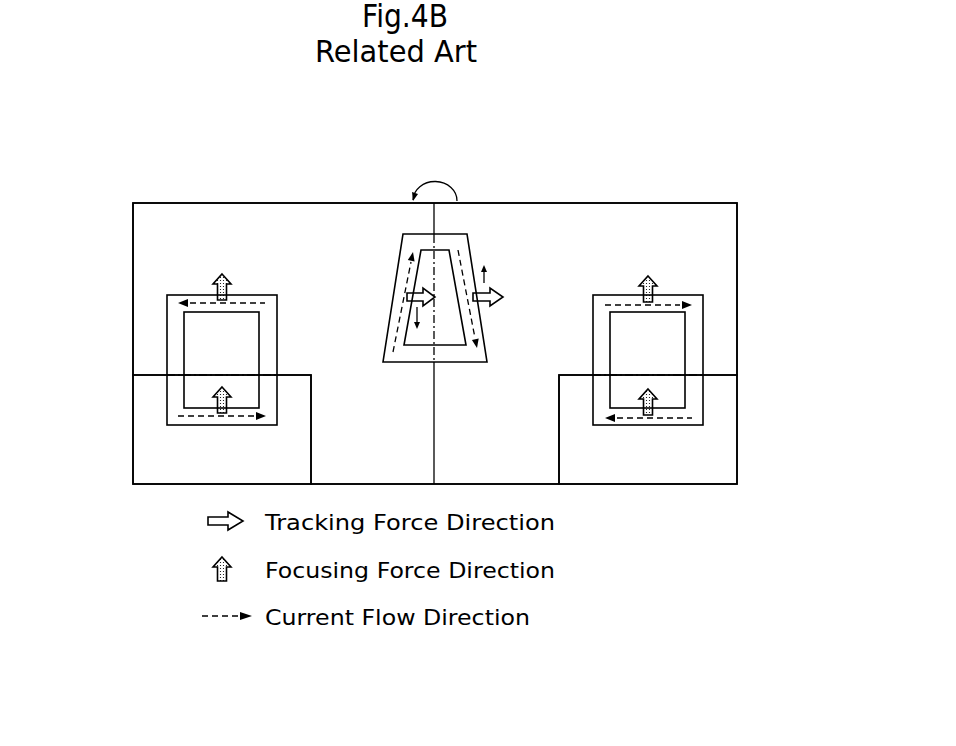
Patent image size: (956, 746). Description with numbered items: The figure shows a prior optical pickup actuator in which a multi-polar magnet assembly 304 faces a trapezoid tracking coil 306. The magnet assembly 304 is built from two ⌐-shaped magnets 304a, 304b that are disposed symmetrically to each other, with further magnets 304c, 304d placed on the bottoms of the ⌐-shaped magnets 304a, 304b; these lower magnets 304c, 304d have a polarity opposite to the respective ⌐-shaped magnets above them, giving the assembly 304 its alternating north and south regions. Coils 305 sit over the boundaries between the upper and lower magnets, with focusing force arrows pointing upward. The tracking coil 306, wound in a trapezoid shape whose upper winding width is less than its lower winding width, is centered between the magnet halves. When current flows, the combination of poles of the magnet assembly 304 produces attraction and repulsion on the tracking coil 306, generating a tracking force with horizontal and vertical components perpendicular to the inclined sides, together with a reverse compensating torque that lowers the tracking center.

The multi-polar magnet assembly 304 is at (759, 190).
The ⌐-shaped magnet 304a is at (242, 220).
The ⌐-shaped magnet 304b is at (635, 223).
The magnet 304c is at (147, 438).
The magnet 304d is at (713, 447).
The focusing coil 305 is at (177, 352).
The tracking coil 306 is at (473, 242).